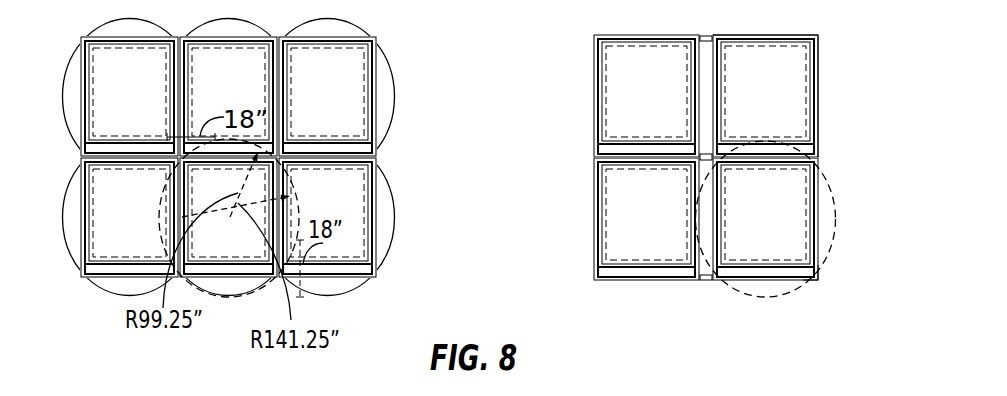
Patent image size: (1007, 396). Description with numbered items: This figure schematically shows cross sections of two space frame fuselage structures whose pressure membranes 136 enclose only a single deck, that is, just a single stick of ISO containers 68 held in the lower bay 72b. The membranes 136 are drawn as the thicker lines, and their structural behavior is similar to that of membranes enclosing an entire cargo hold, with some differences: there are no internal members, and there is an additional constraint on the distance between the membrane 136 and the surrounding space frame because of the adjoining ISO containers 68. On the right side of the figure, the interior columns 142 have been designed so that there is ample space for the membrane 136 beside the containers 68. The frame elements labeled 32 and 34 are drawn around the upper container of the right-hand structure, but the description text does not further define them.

The top rail of panel frame 32 is at (764, 33).
The side post of panel frame 34 is at (815, 75).
The ISO containers 68 is at (142, 230).
The lower bay 72b is at (803, 268).
The pressure membranes 136 is at (822, 165).
The interior columns 142 is at (708, 50).